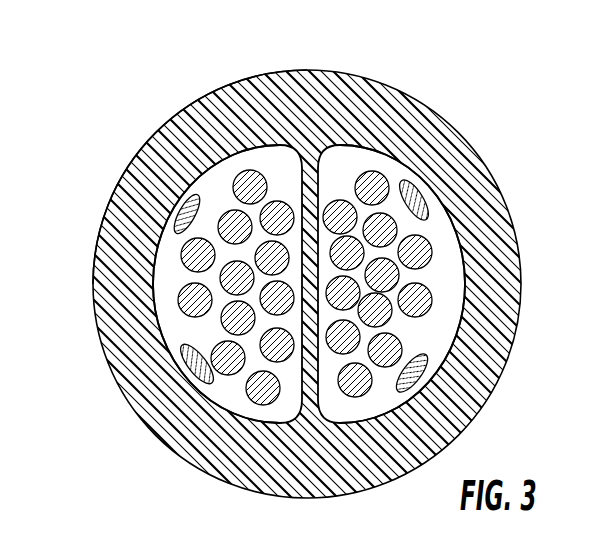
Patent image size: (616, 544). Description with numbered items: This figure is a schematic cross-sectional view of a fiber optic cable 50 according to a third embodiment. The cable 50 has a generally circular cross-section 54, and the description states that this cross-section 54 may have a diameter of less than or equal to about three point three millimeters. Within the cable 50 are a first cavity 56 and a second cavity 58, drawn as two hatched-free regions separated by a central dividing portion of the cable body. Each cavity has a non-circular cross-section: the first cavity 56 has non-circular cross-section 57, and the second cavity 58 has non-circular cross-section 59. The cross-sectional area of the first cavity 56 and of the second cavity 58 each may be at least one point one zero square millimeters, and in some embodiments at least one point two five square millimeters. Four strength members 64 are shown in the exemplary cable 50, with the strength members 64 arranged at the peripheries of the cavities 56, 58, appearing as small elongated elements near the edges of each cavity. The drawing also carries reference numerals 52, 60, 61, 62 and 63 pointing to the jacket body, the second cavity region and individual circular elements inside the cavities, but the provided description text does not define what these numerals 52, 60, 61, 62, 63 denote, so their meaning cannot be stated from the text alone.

The fiber optic cable 50 is at (462, 118).
The jacket 52 is at (220, 440).
The generally circular cross-section 54 is at (110, 194).
The first cavity 56 is at (447, 333).
The non-circular cross-section of first cavity 57 is at (478, 250).
The second cavity 58 is at (165, 291).
The non-circular cross-section of second cavity 59 is at (150, 271).
The second chamber 60 is at (450, 302).
The optical fiber 61 is at (372, 172).
The first group of optical fibers 62 is at (186, 326).
The optical fiber 63 is at (258, 170).
The strength members 64 is at (197, 192).